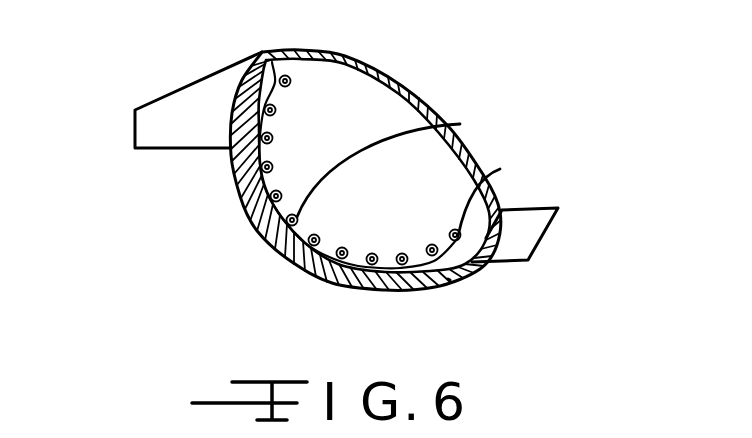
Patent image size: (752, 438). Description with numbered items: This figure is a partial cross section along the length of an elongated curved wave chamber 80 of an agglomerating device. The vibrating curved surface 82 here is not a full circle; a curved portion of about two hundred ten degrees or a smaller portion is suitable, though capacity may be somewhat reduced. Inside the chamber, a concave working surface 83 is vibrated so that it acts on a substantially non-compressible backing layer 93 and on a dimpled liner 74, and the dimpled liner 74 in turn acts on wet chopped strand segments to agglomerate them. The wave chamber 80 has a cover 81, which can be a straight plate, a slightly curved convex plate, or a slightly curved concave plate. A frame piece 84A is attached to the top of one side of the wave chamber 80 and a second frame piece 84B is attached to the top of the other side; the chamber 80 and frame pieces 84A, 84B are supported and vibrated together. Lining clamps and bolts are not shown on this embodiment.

The elongated curved wave chamber 80 is at (260, 240).
The cover 81 is at (402, 84).
The vibrating curved surface 82 is at (448, 279).
The concave working surface 83 is at (460, 124).
The dimpled liner 74 is at (500, 169).
The frame piece 84A is at (155, 128).
The second frame piece 84B is at (522, 242).
The substantially non-compressible backing layer 93 is at (257, 165).